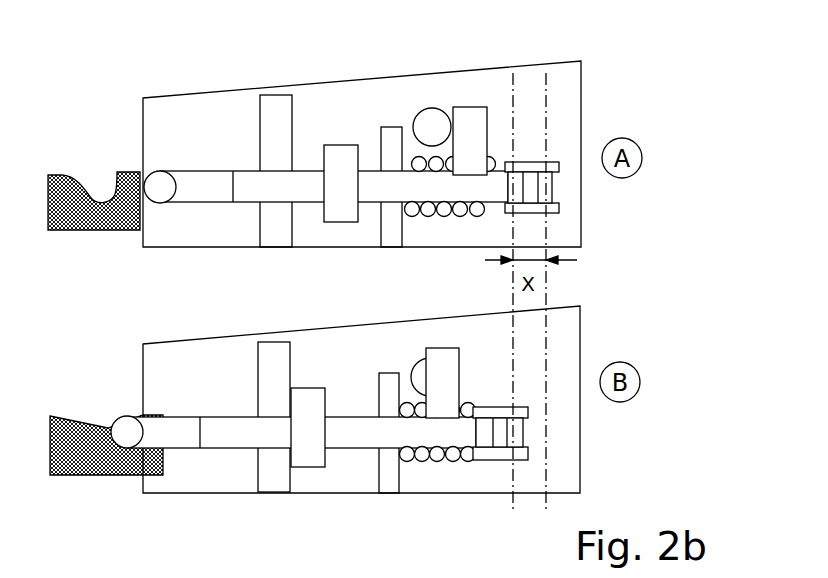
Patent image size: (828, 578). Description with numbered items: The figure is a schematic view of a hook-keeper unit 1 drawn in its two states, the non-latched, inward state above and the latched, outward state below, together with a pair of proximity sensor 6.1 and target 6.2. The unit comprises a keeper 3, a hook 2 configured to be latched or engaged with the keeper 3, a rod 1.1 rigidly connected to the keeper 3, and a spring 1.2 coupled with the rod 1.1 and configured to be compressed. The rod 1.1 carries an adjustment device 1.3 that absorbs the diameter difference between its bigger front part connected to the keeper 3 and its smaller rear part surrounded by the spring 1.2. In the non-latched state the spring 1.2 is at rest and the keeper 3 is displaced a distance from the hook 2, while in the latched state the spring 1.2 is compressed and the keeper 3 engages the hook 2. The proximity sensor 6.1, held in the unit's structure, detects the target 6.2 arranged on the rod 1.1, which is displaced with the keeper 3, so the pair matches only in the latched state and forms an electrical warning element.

The hook-keeper unit 1 is at (113, 135).
The rod 1.1 is at (380, 193).
The spring 1.2 is at (463, 212).
The adjustment device 1.3 is at (338, 158).
The hook 2 is at (60, 173).
The keeper 3 is at (161, 182).
The proximity sensor 6.1 is at (428, 120).
The target 6.2 is at (472, 115).